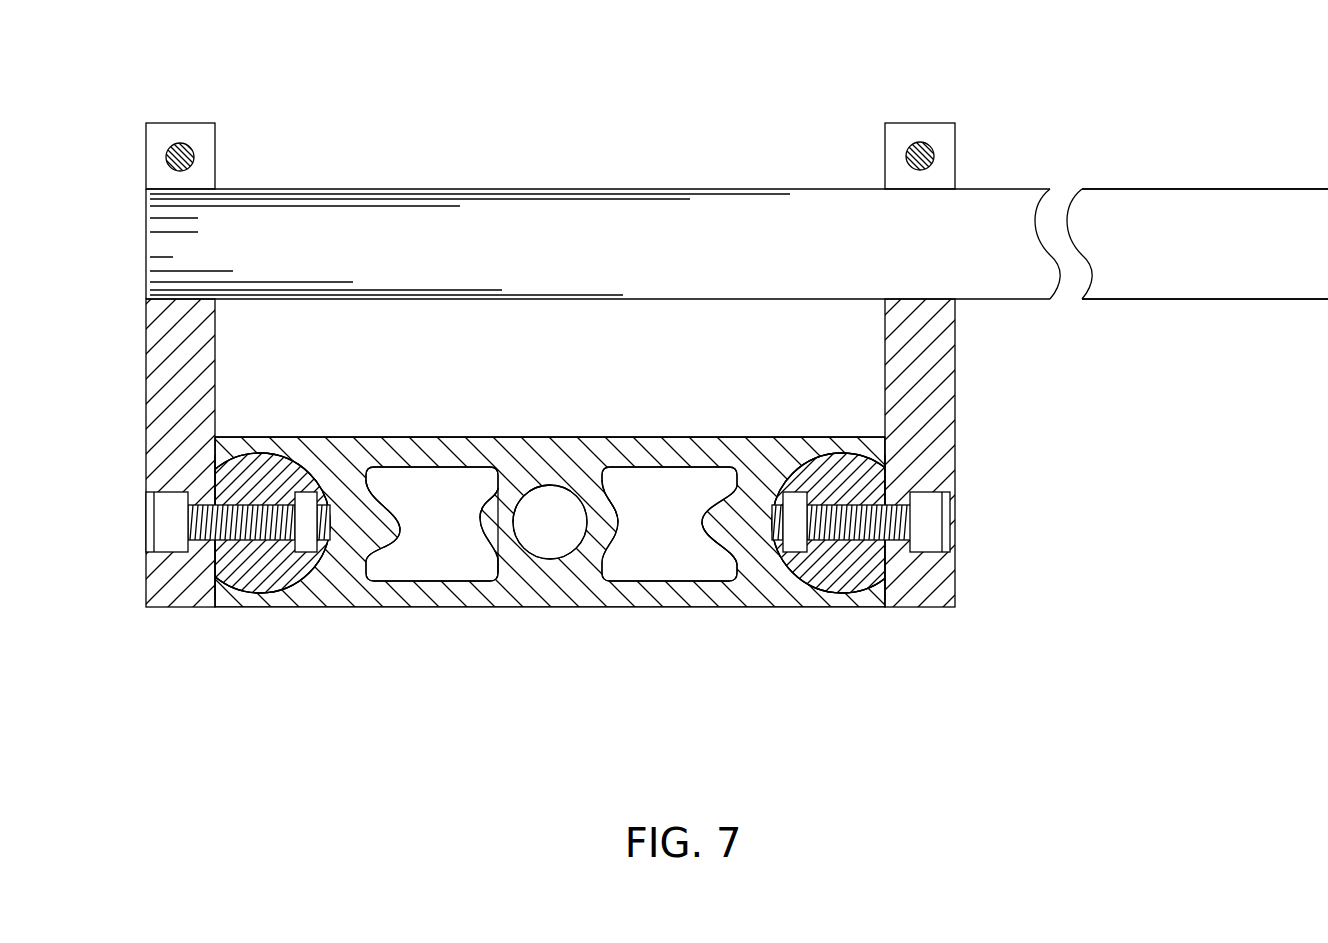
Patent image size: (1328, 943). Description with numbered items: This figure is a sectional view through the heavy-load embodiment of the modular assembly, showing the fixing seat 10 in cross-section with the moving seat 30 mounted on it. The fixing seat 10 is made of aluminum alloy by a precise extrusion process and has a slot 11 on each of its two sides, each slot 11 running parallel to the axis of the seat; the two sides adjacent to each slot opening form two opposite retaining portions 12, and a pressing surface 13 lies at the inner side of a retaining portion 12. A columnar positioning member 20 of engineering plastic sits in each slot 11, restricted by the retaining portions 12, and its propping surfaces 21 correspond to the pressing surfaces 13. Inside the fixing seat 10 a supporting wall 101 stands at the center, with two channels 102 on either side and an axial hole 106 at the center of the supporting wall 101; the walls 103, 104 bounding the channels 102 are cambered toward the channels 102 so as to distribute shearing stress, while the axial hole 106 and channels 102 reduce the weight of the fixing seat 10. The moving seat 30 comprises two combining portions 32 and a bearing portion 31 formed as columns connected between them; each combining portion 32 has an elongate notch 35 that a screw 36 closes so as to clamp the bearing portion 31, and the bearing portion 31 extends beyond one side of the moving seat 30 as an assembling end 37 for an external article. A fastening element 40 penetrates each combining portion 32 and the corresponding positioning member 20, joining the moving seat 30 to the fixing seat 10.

The moving seat 30 is at (700, 310).
The bearing portion 31 is at (630, 217).
The combining portion 32 is at (160, 387).
The elongate notch 35 is at (155, 160).
The screw 36 is at (197, 160).
The assembling end 37 is at (1302, 205).
The fixing seat 10 is at (551, 519).
The slot 11 is at (350, 475).
The retaining portion 12 is at (218, 462).
The pressing surface 13 is at (551, 533).
The propping surface 21 is at (258, 452).
The positioning member 20 is at (490, 533).
The fastening element 40 is at (165, 523).
The supporting wall 101 is at (502, 510).
The channel 102 is at (448, 562).
The wall 103 is at (470, 475).
The wall 104 is at (420, 560).
The axial hole 106 is at (550, 538).